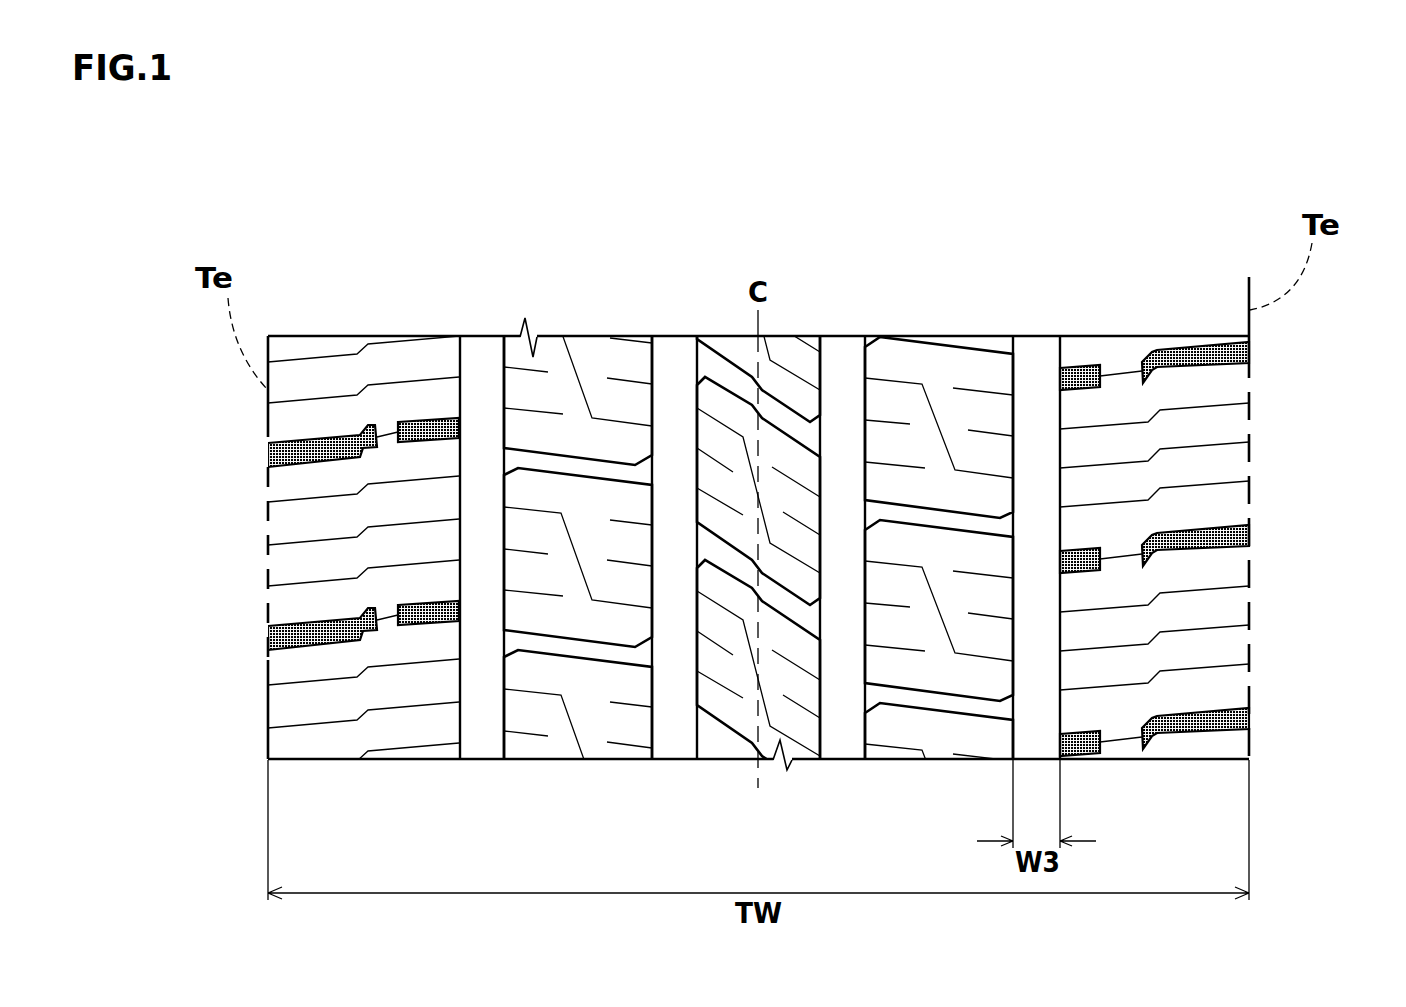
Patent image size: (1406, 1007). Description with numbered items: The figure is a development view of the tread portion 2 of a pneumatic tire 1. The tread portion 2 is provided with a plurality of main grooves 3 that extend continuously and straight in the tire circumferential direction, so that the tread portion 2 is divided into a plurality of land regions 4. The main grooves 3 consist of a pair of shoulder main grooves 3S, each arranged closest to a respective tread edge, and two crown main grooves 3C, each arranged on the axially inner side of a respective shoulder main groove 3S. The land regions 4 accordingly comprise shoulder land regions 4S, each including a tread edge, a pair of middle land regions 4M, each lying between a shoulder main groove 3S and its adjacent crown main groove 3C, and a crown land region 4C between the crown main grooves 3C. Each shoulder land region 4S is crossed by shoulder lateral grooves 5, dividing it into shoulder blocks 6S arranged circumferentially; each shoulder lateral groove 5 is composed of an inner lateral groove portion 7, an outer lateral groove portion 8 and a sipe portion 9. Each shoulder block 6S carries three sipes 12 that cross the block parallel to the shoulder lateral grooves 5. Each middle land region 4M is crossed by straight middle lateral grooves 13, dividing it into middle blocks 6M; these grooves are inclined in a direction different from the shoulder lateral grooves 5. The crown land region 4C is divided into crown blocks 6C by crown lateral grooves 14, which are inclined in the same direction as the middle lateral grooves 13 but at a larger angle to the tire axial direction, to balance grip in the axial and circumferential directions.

The pneumatic tire 1 is at (831, 443).
The tread portion 2 is at (758, 523).
The main grooves 3 is at (764, 504).
The shoulder main grooves 3S is at (482, 370).
The crown main grooves 3C is at (675, 370).
The land regions 4 is at (813, 539).
The shoulder land regions 4S is at (813, 514).
The middle land regions 4M is at (758, 540).
The crown land region 4C is at (717, 513).
The shoulder lateral grooves 5 is at (1209, 536).
The shoulder blocks 6S is at (1262, 368).
The middle blocks 6M is at (930, 678).
The crown blocks 6C is at (727, 705).
The inner lateral groove portion 7 is at (1077, 563).
The outer lateral groove portion 8 is at (1200, 547).
The sipe portion 9 is at (1120, 557).
The sipes 12 is at (1093, 687).
The middle lateral grooves 13 is at (970, 703).
The crown lateral grooves 14 is at (738, 565).